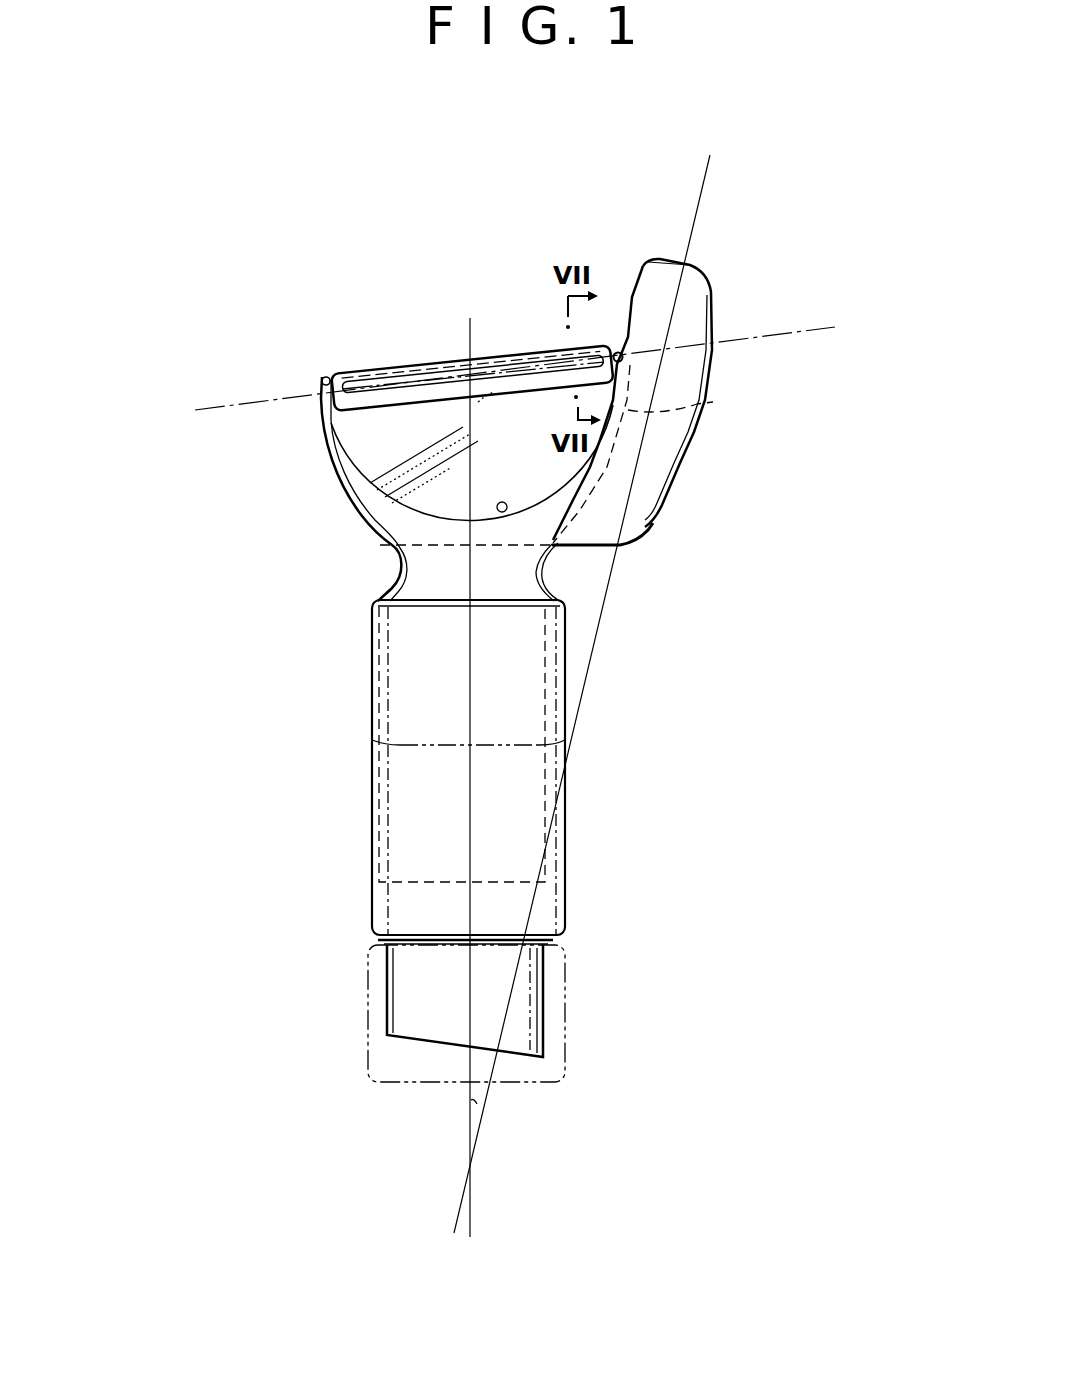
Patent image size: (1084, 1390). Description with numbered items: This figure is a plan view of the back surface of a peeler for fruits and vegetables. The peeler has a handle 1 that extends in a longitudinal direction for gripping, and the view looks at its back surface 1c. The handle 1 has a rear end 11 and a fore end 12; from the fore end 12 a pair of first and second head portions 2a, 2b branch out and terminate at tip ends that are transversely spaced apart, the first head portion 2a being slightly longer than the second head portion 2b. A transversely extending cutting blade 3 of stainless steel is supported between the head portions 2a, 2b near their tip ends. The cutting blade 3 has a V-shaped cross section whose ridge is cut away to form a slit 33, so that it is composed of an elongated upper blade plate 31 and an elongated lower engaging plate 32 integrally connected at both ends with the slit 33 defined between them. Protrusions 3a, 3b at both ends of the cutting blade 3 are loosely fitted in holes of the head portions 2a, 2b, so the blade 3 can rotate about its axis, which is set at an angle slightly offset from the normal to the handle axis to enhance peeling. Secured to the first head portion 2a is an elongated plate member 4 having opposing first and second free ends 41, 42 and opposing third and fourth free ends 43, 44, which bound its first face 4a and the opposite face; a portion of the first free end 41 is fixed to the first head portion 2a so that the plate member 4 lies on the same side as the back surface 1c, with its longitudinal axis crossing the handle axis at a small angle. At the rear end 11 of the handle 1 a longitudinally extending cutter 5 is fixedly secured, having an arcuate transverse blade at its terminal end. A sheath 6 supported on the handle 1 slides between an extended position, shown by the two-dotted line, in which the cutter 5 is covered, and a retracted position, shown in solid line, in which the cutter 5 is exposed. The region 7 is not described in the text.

The handle 1 is at (378, 813).
The back surface 1c is at (430, 577).
The first head portion 2a is at (700, 404).
The second head portion 2b is at (320, 433).
The cutting blade 3 is at (370, 360).
The protrusion 3a is at (617, 352).
The protrusion 3b is at (326, 378).
The plate member 4 is at (714, 300).
The first face 4a is at (640, 506).
The cutter 5 is at (535, 980).
The sheath 6 is at (565, 892).
The bowl recess 7 is at (365, 457).
The rear end 11 is at (408, 948).
The fore end 12 is at (502, 514).
The upper blade plate 31 is at (471, 364).
The lower engaging plate 32 is at (473, 374).
The slit 33 is at (424, 366).
The first free end 41 is at (634, 290).
The second free end 42 is at (694, 468).
The third free end 43 is at (660, 262).
The fourth free end 44 is at (590, 548).